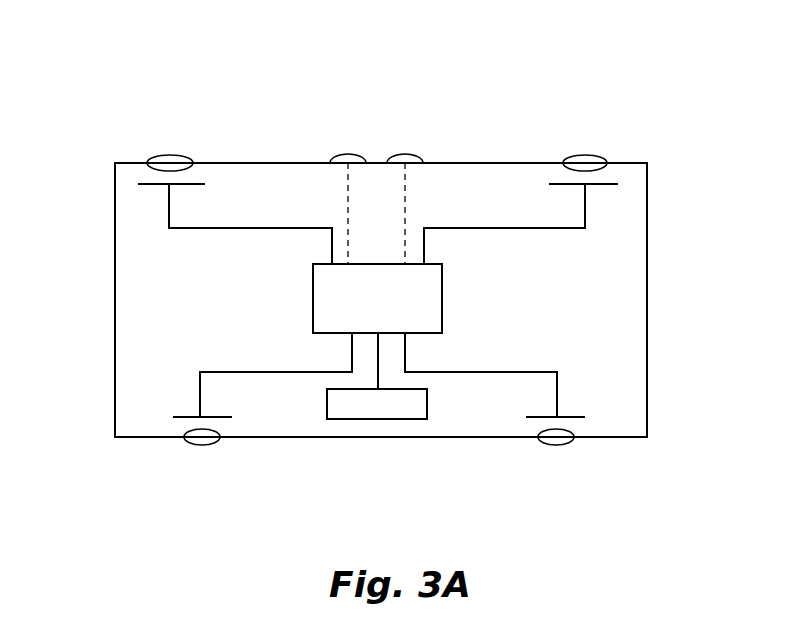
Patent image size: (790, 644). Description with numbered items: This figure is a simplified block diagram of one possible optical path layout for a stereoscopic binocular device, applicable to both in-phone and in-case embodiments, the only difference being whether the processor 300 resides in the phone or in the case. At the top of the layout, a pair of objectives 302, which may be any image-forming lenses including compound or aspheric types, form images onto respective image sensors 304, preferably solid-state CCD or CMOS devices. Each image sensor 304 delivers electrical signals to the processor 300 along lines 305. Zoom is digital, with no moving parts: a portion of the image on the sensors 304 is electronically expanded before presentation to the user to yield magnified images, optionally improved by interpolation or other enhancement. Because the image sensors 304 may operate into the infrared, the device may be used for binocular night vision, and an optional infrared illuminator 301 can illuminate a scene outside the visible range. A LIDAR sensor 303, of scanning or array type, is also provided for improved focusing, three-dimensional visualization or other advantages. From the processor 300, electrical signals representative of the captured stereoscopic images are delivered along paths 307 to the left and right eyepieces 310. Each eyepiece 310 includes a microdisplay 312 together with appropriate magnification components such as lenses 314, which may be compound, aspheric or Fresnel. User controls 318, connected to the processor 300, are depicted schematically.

The processor 300 is at (377, 298).
The infrared illuminator 301 is at (407, 152).
The objective 302 is at (190, 128).
The LIDAR sensor 303 is at (347, 150).
The image sensor 304 is at (160, 187).
The line 305 is at (377, 224).
The path 307 is at (378, 375).
The eyepiece 310 is at (205, 474).
The microdisplay 312 is at (188, 414).
The lens 314 is at (198, 443).
The user controls 318 is at (377, 376).